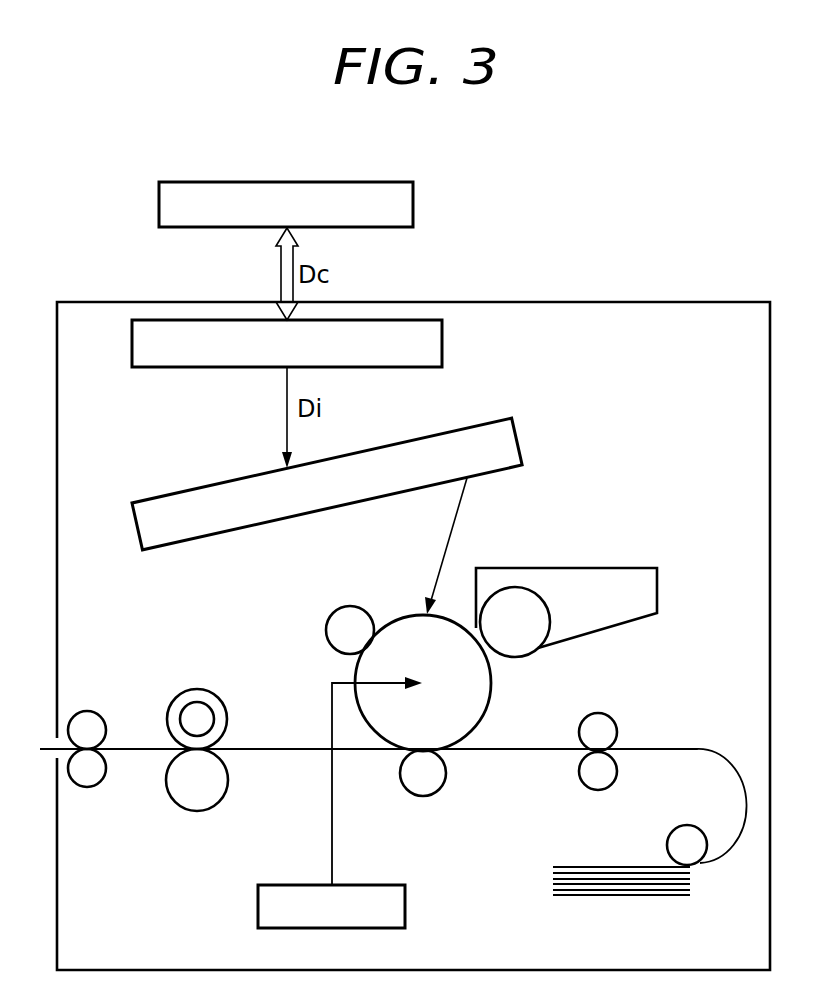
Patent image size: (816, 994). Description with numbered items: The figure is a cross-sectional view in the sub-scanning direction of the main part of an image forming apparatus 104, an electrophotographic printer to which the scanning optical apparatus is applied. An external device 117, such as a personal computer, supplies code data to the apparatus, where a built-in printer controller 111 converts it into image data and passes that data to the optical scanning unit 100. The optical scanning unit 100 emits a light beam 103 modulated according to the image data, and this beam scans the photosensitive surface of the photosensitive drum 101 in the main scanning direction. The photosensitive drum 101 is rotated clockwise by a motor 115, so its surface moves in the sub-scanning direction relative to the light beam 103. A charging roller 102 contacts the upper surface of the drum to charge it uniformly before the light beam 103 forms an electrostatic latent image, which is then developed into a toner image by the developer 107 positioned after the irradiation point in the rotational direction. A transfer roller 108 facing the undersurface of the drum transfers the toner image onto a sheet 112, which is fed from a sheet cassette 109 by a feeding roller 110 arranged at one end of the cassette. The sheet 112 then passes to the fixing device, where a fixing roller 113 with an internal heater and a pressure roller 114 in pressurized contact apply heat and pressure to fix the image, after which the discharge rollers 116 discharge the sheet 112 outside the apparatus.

The optical scanning unit 100 is at (184, 490).
The photosensitive drum 101 is at (488, 700).
The charging roller 102 is at (343, 613).
The light beam 103 is at (452, 533).
The image forming apparatus 104 is at (568, 300).
The developer 107 is at (594, 572).
The transfer roller 108 is at (441, 775).
The sheet cassette 109 is at (617, 897).
The feeding roller 110 is at (686, 836).
The printer controller 111 is at (444, 345).
The sheet 112 is at (302, 748).
The fixing roller 113 is at (210, 696).
The pressure roller 114 is at (193, 805).
The motor 115 is at (370, 883).
The discharge rollers 116 is at (97, 717).
The external device 117 is at (388, 184).